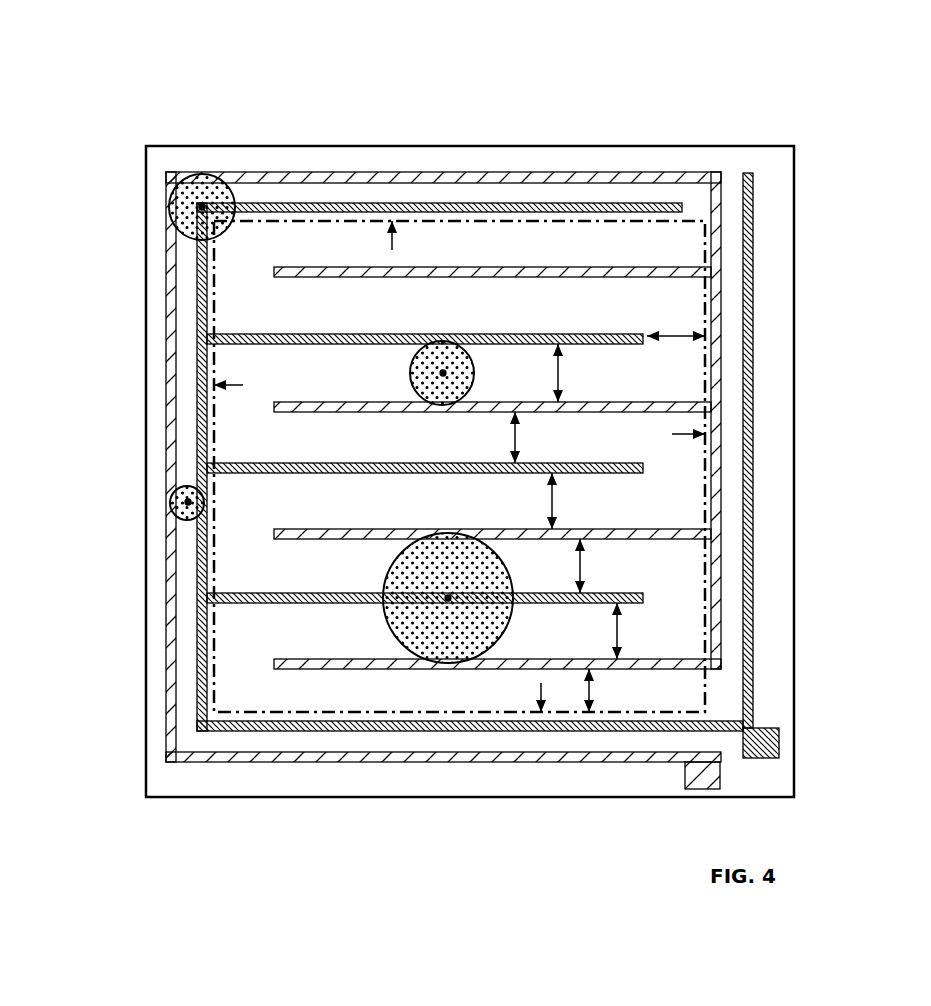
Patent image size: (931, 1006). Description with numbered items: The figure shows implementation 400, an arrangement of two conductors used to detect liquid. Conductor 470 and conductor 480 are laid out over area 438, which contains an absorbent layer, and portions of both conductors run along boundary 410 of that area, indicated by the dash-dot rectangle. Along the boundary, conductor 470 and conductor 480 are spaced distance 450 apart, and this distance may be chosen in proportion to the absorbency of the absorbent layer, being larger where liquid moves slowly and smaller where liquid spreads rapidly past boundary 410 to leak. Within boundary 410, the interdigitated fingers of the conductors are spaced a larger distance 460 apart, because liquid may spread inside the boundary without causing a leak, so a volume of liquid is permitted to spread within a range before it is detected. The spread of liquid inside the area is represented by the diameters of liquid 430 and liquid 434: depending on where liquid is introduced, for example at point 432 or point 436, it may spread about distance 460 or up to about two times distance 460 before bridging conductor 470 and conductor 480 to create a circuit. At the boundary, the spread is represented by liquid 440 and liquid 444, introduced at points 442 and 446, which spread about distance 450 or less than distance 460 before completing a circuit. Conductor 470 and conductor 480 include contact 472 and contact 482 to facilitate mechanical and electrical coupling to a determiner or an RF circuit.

The implementation 400 is at (90, 33).
The boundary 410 is at (503, 222).
The liquid 430 is at (410, 379).
The liquid introduction point 432 is at (443, 373).
The liquid 434 is at (388, 626).
The liquid introduction point 436 is at (448, 598).
The area 438 is at (618, 146).
The liquid 440 is at (177, 520).
The liquid introduction point 442 is at (188, 502).
The liquid 444 is at (173, 192).
The liquid introduction point 446 is at (200, 207).
The distance 450 is at (392, 172).
The distance 460 is at (560, 378).
The conductor 470 is at (363, 763).
The contact 472 is at (685, 764).
The conductor 480 is at (753, 570).
The contact 482 is at (757, 757).